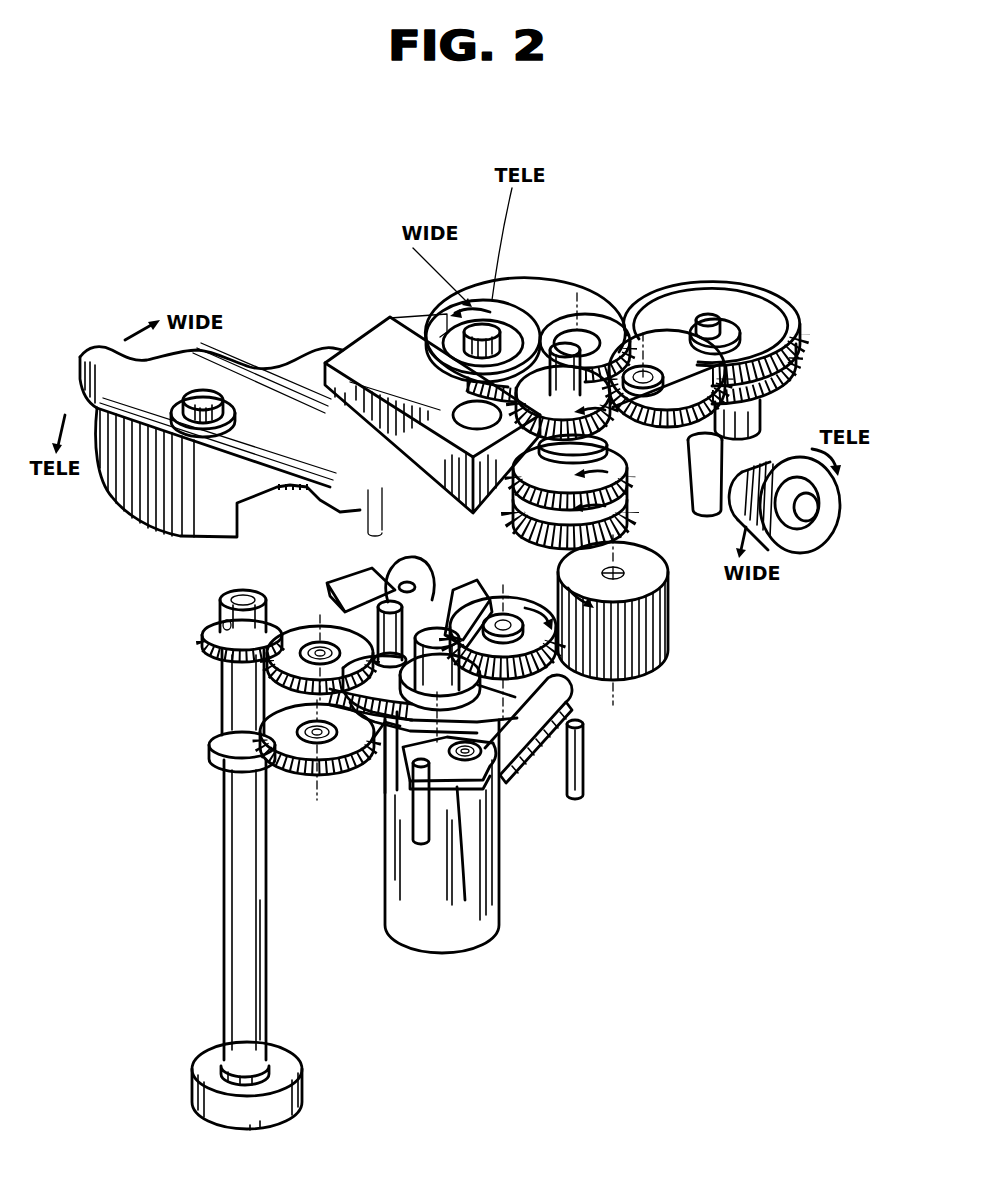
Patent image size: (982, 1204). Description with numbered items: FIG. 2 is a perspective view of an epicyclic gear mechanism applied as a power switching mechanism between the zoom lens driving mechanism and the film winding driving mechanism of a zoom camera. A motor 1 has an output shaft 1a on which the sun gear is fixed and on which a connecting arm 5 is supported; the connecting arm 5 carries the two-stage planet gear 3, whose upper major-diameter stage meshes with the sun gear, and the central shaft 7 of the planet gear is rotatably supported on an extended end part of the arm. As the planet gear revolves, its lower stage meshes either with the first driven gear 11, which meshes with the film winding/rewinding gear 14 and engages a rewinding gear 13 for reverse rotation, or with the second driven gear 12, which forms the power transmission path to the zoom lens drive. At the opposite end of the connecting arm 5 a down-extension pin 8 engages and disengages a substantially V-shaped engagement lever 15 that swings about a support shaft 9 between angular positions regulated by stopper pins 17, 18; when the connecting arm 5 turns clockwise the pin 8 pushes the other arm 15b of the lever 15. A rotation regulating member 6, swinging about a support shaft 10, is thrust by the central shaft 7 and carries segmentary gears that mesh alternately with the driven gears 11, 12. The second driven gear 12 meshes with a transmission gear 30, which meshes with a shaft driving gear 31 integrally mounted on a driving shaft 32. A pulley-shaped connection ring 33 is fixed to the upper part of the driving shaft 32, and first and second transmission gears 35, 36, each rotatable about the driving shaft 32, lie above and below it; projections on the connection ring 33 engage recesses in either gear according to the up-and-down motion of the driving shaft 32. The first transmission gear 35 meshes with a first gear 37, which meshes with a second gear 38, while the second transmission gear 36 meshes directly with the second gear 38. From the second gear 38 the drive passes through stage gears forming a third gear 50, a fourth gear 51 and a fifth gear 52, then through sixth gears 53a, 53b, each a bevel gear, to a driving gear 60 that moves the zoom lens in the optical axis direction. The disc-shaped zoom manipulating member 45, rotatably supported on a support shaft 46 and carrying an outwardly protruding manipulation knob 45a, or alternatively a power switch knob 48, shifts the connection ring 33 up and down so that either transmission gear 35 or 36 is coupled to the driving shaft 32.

The motor 1 is at (490, 887).
The output shaft 1a is at (443, 627).
The planet gear 3 is at (338, 762).
The connecting arm 5 is at (380, 792).
The rotation regulating member 6 is at (420, 577).
The central shaft 7 is at (373, 577).
The down-extension pin 8 is at (497, 780).
The support shaft 9 is at (460, 880).
The support shaft 10 is at (404, 580).
The first driven gear 11 is at (307, 633).
The second driven gear 12 is at (503, 597).
The rewinding gear 13 is at (290, 758).
The film winding/rewinding gear 14 is at (222, 625).
The engagement lever 15 is at (527, 720).
The other arm of engagement lever 15b is at (400, 810).
The stopper pin 17 is at (420, 850).
The stopper pin 18 is at (583, 780).
The transmission gear 30 is at (670, 652).
The shaft driving gear 31 is at (625, 527).
The driving shaft 32 is at (547, 327).
The connection ring 33 is at (618, 457).
The first transmission gear 35 is at (798, 357).
The second transmission gear 36 is at (627, 488).
The first gear 37 is at (593, 327).
The second gear 38 is at (432, 330).
The zoom manipulating member 45 is at (130, 517).
The manipulation knob 45a is at (103, 356).
The support shaft 46 is at (213, 403).
The power switch knob 48 is at (372, 348).
The third gear 50 is at (527, 285).
The fourth gear 51 is at (657, 340).
The fifth gear 52 is at (747, 290).
The sixth gear 53a is at (752, 430).
The sixth gear 53b is at (700, 489).
The driving gear 60 is at (800, 548).